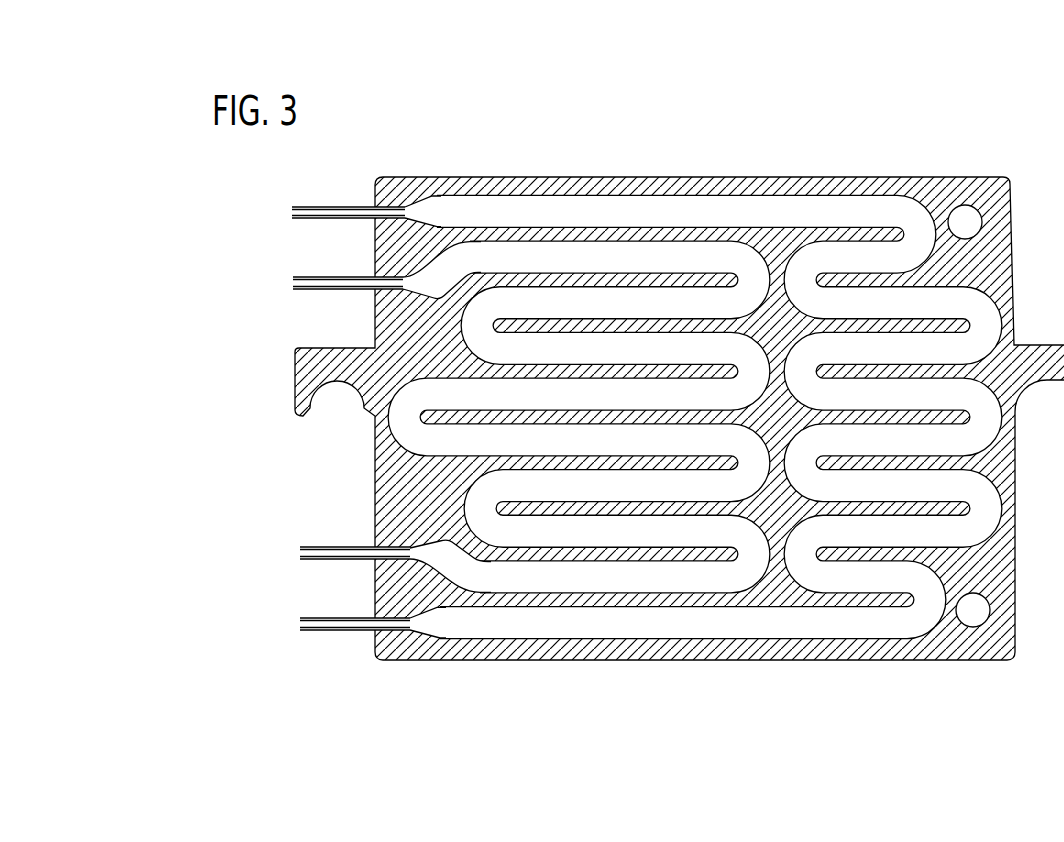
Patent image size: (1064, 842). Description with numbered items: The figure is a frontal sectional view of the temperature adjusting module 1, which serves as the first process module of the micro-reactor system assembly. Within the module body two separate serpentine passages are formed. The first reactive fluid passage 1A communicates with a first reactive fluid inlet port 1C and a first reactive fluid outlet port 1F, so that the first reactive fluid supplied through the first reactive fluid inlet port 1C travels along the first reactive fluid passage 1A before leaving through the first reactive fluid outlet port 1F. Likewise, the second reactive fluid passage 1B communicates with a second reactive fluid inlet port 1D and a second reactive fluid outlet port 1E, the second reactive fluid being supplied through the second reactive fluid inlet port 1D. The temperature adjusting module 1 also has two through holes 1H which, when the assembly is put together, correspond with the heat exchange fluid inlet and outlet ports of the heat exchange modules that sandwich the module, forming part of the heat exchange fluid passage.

The temperature adjusting module 1 is at (767, 182).
The first reactive fluid passage 1A is at (496, 206).
The second reactive fluid passage 1B is at (633, 252).
The first reactive fluid inlet port 1C is at (293, 220).
The second reactive fluid inlet port 1D is at (293, 291).
The second reactive fluid outlet port 1E is at (300, 560).
The first reactive fluid outlet port 1F is at (300, 632).
The through holes 1H is at (962, 217).